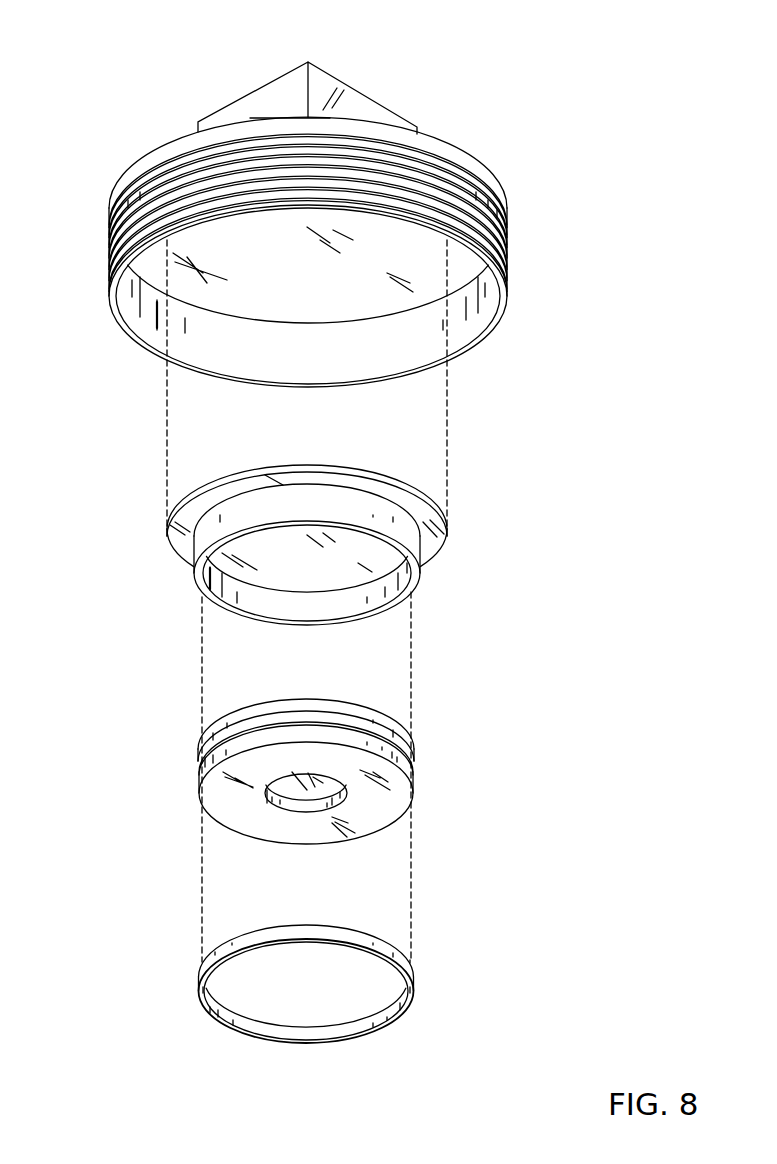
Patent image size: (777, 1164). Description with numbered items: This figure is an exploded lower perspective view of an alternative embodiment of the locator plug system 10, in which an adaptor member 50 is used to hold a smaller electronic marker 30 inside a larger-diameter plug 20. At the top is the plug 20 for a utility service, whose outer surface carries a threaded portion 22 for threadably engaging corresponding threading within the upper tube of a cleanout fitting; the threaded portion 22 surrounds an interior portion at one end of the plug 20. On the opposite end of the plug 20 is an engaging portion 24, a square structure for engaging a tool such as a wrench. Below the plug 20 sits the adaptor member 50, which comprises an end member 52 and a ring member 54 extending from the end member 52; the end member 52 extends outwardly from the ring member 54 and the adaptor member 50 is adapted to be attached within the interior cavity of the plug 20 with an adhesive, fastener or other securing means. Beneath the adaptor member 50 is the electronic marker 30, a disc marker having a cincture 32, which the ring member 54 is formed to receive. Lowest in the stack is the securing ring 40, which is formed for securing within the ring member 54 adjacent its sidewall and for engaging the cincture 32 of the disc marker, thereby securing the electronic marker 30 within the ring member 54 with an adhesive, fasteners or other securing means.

The locator plug system 10 is at (512, 106).
The plug 20 is at (473, 340).
The threaded portion 22 is at (130, 233).
The engaging portion 24 is at (275, 100).
The electronic marker 30 is at (372, 812).
The cincture 32 is at (200, 762).
The securing ring 40 is at (252, 1030).
The adaptor member 50 is at (165, 564).
The end member 52 is at (437, 550).
The ring member 54 is at (340, 610).